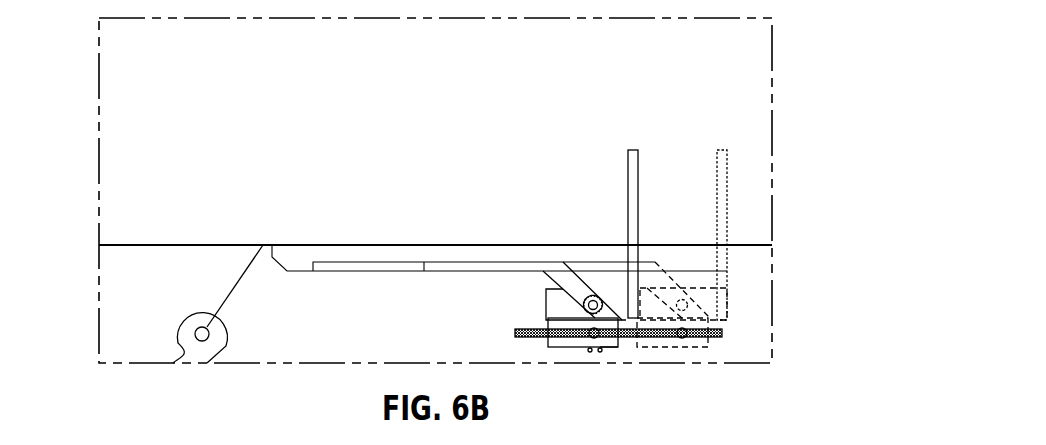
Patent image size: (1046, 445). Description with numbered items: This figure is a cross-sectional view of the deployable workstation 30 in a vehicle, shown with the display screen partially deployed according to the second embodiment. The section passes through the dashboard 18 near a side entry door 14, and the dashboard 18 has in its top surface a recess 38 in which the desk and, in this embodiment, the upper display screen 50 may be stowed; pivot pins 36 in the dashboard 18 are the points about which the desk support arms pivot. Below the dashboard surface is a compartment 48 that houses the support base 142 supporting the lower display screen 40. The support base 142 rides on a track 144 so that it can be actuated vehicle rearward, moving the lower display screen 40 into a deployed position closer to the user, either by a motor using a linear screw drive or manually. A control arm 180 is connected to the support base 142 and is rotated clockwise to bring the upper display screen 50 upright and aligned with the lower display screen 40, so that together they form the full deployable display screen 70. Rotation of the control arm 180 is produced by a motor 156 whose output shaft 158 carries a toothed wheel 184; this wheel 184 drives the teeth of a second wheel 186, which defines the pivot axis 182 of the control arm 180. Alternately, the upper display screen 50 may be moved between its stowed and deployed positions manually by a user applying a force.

The side entry door 14 is at (142, 244).
The dashboard 18 is at (745, 246).
The deployable workstation 30 is at (742, 112).
The pivot pin 36 is at (201, 333).
The recess 38 is at (353, 252).
The lower display screen 40 is at (667, 150).
The compartment 48 is at (490, 307).
The upper display screen 50 is at (416, 264).
The deployable display screen 70 is at (622, 150).
The support base 142 is at (555, 302).
The track 144 is at (697, 340).
The motor 156 is at (608, 342).
The output shaft 158 is at (590, 334).
The control arm 180 is at (565, 273).
The pivot axis 182 is at (600, 303).
The wheel 184 is at (588, 350).
The wheel 186 is at (583, 300).